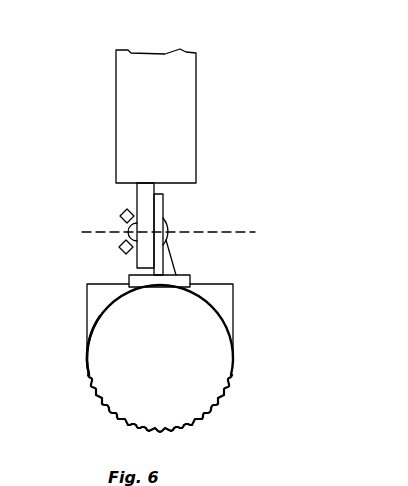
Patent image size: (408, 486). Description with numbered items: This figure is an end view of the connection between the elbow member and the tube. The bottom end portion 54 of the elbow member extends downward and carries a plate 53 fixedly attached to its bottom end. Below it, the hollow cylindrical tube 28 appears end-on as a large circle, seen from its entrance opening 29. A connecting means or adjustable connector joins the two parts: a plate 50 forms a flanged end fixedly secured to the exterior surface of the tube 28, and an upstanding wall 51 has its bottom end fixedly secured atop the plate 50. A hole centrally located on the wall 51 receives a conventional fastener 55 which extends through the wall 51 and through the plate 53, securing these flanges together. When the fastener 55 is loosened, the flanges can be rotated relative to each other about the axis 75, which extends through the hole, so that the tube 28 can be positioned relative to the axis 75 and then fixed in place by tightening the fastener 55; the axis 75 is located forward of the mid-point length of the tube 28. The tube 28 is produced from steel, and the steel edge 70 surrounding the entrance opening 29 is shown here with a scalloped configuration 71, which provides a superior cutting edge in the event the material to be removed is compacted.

The hollow cylindrical tube 28 is at (218, 311).
The entrance opening 29 is at (210, 375).
The plate 50 is at (184, 274).
The upstanding wall 51 is at (160, 205).
The plate 53 is at (143, 205).
The bottom end portion of elbow member 54 is at (180, 142).
The fastener 55 is at (128, 226).
The steel edge 70 is at (98, 318).
The scalloped configuration 71 is at (121, 420).
The axis 75 is at (232, 232).